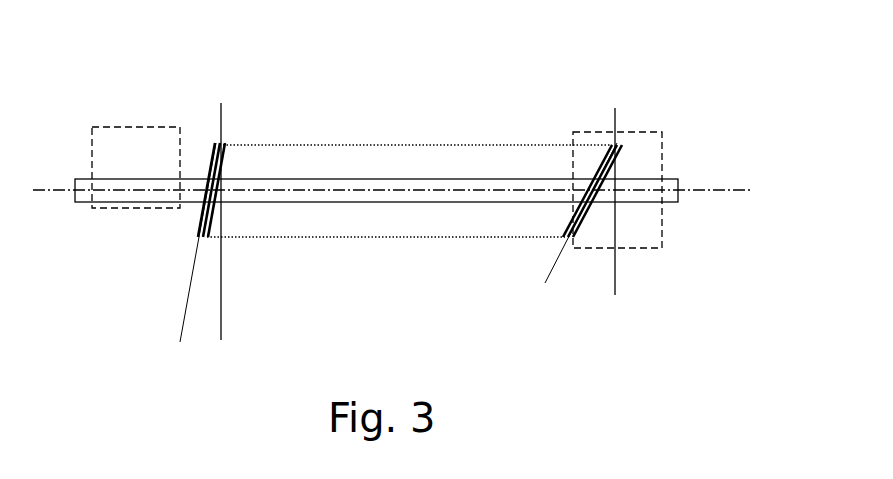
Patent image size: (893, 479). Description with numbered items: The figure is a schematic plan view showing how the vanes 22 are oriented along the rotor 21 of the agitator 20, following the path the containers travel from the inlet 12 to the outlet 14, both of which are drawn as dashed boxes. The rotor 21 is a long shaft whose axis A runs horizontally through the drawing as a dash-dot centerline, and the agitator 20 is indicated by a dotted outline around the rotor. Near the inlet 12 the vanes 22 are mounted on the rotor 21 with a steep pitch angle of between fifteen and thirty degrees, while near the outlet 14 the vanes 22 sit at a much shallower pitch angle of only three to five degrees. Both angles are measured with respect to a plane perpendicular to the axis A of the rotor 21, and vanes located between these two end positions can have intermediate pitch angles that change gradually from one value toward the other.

The inlet 12 is at (647, 152).
The outlet 14 is at (147, 145).
The agitator 20 is at (391, 128).
The rotor 21 is at (397, 202).
The vanes 22 is at (223, 167).
The axis of the rotor A is at (707, 190).